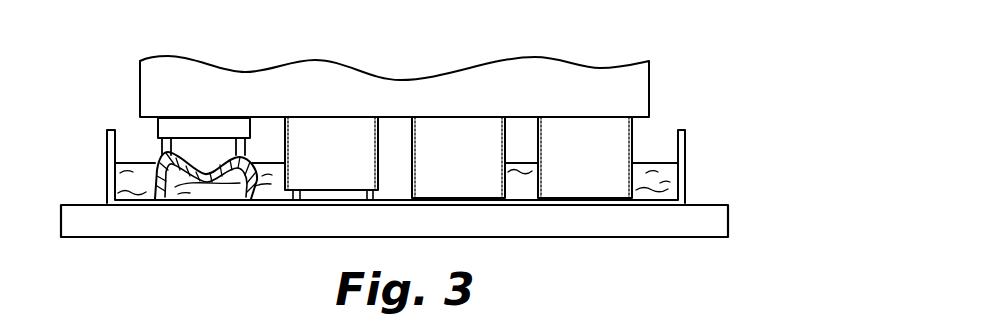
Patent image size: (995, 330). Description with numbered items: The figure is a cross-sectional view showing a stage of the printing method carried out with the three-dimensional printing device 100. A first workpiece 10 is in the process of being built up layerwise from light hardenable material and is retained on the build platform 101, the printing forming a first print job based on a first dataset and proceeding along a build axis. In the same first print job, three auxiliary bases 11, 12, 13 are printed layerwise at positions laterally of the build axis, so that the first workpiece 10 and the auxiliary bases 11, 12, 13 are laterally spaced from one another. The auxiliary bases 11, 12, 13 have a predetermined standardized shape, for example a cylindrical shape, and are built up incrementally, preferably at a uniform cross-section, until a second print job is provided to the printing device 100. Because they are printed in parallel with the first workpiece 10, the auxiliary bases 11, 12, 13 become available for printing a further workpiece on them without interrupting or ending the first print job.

The 3D printing device 100 is at (668, 42).
The build platform 101 is at (248, 80).
The first workpiece 10 is at (158, 195).
The auxiliary base 11 is at (328, 128).
The auxiliary base 12 is at (460, 128).
The auxiliary base 13 is at (590, 128).